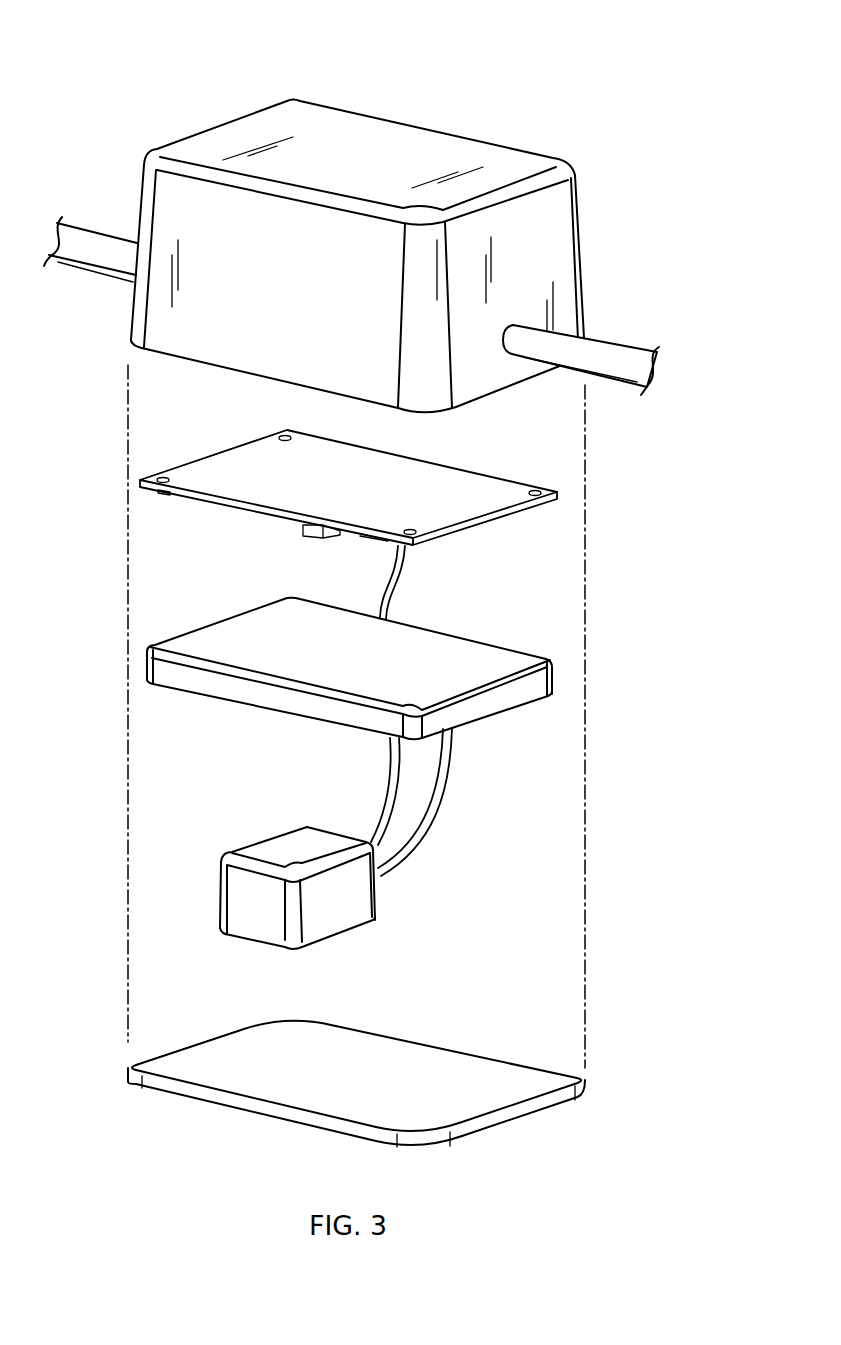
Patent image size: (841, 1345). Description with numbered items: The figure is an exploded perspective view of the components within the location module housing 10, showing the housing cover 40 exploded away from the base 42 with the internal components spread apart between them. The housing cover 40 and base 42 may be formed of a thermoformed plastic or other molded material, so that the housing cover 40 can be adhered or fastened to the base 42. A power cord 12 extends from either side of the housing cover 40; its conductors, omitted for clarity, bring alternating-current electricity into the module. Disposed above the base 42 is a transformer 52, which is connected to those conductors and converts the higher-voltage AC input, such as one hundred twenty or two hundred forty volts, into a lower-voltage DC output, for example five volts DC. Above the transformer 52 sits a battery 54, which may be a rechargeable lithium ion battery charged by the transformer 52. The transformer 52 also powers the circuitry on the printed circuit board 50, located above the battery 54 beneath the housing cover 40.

The sensor device assembly 10 is at (637, 60).
The power cord 12 is at (87, 243).
The housing cover 40 is at (376, 118).
The base 42 is at (533, 1118).
The printed circuit board 50 is at (462, 488).
The transformer 52 is at (353, 888).
The battery 54 is at (475, 658).